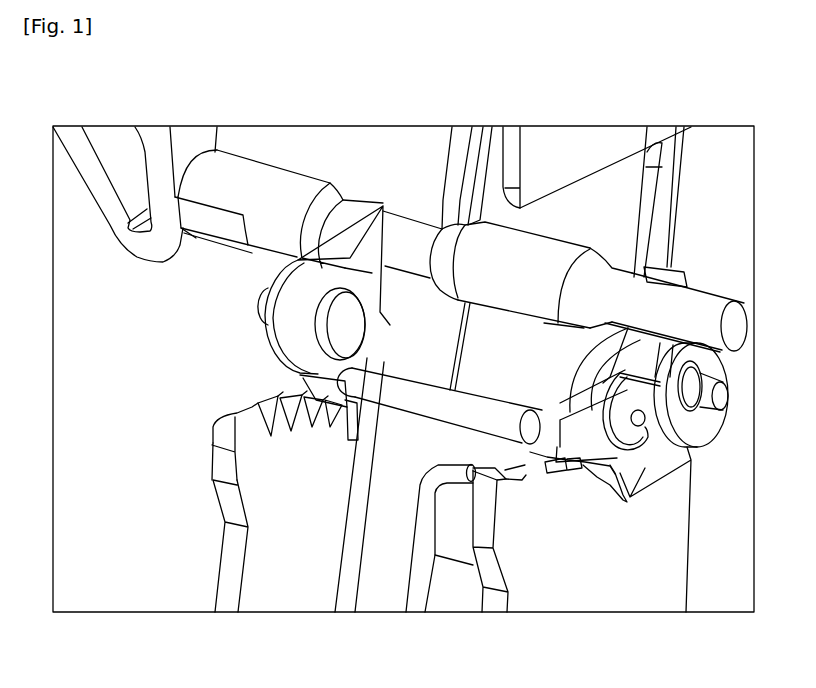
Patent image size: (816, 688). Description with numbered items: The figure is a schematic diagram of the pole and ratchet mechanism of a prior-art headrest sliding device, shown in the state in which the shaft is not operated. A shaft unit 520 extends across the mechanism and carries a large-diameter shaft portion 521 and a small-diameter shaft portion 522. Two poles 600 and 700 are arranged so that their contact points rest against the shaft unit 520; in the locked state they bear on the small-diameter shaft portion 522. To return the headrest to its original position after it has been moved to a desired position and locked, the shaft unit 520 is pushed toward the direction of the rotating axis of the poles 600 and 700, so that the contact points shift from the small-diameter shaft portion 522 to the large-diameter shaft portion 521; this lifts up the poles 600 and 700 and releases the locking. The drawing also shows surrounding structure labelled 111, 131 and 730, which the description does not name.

The rack bar 111 is at (250, 438).
The bracket 131 is at (554, 483).
The shaft unit 520 is at (289, 166).
The cylinder 521 is at (238, 173).
The shaft 522 is at (412, 225).
The rocker 600 is at (243, 322).
The hook member 700 is at (709, 434).
The pin 730 is at (436, 410).